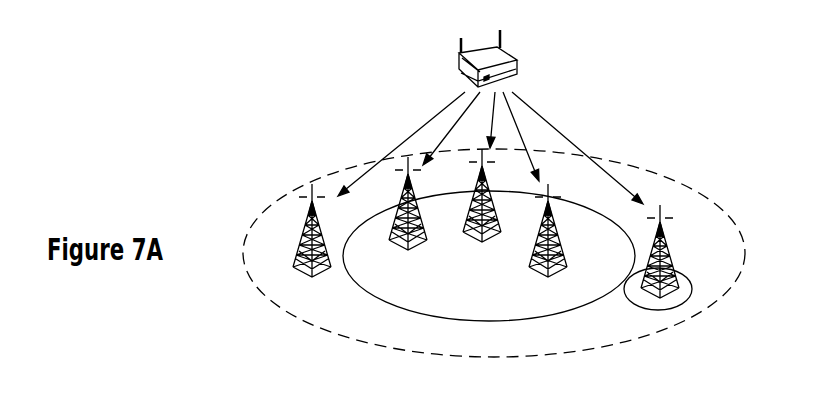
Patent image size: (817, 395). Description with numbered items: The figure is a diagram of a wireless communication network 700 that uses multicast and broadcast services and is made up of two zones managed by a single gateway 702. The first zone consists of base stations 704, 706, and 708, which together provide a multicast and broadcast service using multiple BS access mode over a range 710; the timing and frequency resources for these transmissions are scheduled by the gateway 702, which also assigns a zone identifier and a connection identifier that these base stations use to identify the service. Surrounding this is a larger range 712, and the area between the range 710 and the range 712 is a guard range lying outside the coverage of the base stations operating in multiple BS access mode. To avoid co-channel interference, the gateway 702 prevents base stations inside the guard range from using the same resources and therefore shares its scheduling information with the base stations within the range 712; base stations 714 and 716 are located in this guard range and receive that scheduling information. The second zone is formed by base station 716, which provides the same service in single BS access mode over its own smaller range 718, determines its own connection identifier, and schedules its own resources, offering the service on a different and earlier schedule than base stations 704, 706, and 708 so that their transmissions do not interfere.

The wireless communication network 700 is at (348, 105).
The gateway 702 is at (538, 44).
The base station 704 is at (392, 246).
The base station 706 is at (470, 244).
The base station 708 is at (536, 276).
The range 710 is at (622, 237).
The range 712 is at (720, 198).
The base station 714 is at (320, 282).
The base station 716 is at (676, 250).
The range 718 is at (698, 287).